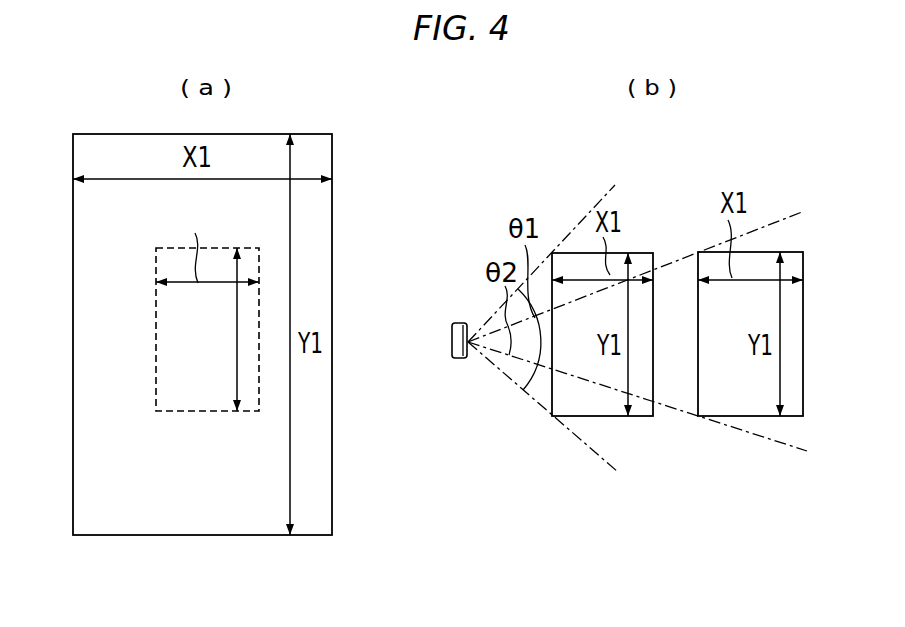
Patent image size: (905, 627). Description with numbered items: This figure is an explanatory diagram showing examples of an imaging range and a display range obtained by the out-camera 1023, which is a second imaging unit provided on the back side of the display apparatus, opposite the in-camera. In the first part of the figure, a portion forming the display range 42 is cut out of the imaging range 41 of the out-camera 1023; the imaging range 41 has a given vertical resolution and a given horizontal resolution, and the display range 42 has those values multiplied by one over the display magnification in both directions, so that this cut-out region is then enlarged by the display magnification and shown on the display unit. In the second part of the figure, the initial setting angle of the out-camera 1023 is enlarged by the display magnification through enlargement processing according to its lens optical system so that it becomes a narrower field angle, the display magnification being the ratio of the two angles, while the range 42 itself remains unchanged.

The imaging range 41 is at (192, 535).
The display range 42 is at (200, 411).
The out-camera 1023 is at (456, 358).